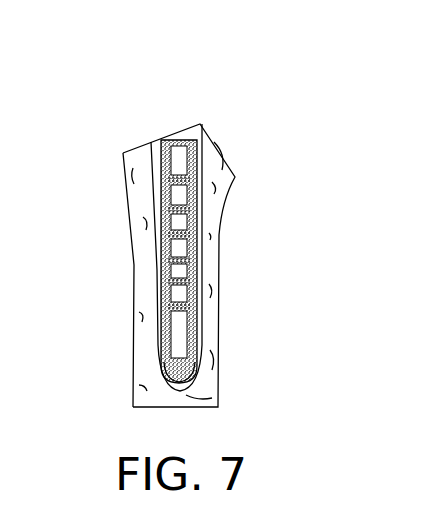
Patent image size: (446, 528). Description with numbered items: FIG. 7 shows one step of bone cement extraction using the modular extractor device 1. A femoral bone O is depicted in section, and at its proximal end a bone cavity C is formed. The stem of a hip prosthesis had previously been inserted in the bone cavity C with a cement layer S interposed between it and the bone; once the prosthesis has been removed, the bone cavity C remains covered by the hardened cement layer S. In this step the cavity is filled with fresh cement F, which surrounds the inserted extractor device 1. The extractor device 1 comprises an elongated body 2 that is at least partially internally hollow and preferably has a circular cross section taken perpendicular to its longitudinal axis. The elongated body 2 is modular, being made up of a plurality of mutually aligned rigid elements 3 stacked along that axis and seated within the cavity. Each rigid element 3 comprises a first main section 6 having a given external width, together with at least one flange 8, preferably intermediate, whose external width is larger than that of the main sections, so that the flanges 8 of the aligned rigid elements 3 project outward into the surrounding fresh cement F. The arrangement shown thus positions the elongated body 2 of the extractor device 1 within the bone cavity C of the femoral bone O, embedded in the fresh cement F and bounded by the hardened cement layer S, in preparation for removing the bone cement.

The modular extractor device 1 is at (198, 125).
The elongated body 2 is at (153, 196).
The rigid elements 3 is at (200, 243).
The first main section 6 is at (190, 290).
The flange 8 is at (203, 317).
The fresh cement F is at (151, 162).
The cement layer S is at (157, 287).
The femoral bone O is at (140, 342).
The bone cavity C is at (193, 370).